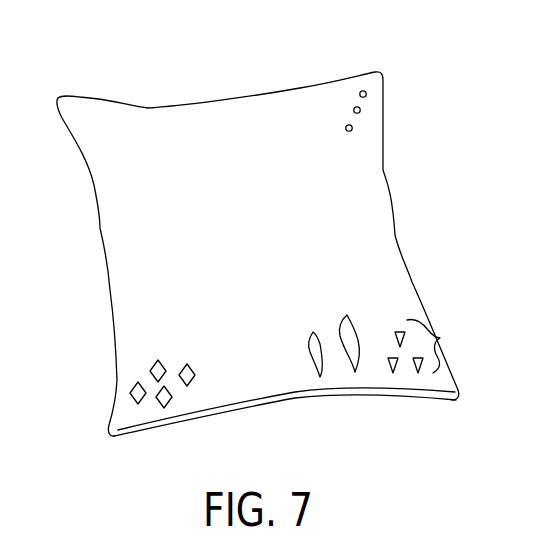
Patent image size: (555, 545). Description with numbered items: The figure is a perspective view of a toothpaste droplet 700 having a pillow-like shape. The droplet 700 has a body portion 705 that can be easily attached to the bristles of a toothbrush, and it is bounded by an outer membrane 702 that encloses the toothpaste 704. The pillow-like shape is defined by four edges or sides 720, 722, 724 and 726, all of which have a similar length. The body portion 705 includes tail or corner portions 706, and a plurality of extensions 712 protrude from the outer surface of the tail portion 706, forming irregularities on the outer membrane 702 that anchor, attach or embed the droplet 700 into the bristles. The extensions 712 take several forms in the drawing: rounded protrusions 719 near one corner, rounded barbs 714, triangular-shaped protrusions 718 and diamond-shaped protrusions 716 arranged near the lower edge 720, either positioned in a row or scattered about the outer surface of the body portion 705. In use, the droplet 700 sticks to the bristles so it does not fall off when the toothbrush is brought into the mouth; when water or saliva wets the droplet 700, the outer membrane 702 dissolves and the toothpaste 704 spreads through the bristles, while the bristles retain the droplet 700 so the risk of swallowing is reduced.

The droplet 700 is at (413, 70).
The outer membrane 702 is at (362, 223).
The toothpaste 704 is at (375, 160).
The body portion 705 is at (201, 120).
The tail portion 706 is at (460, 382).
The extensions 712 is at (440, 346).
The rounded barbs 714 is at (355, 372).
The diamond-shaped protrusions 716 is at (138, 404).
The triangular-shaped protrusions 718 is at (418, 373).
The rounded protrusions 719 is at (366, 96).
The edge 720 is at (250, 408).
The edge 722 is at (112, 103).
The edge 724 is at (100, 228).
The edge 726 is at (420, 282).